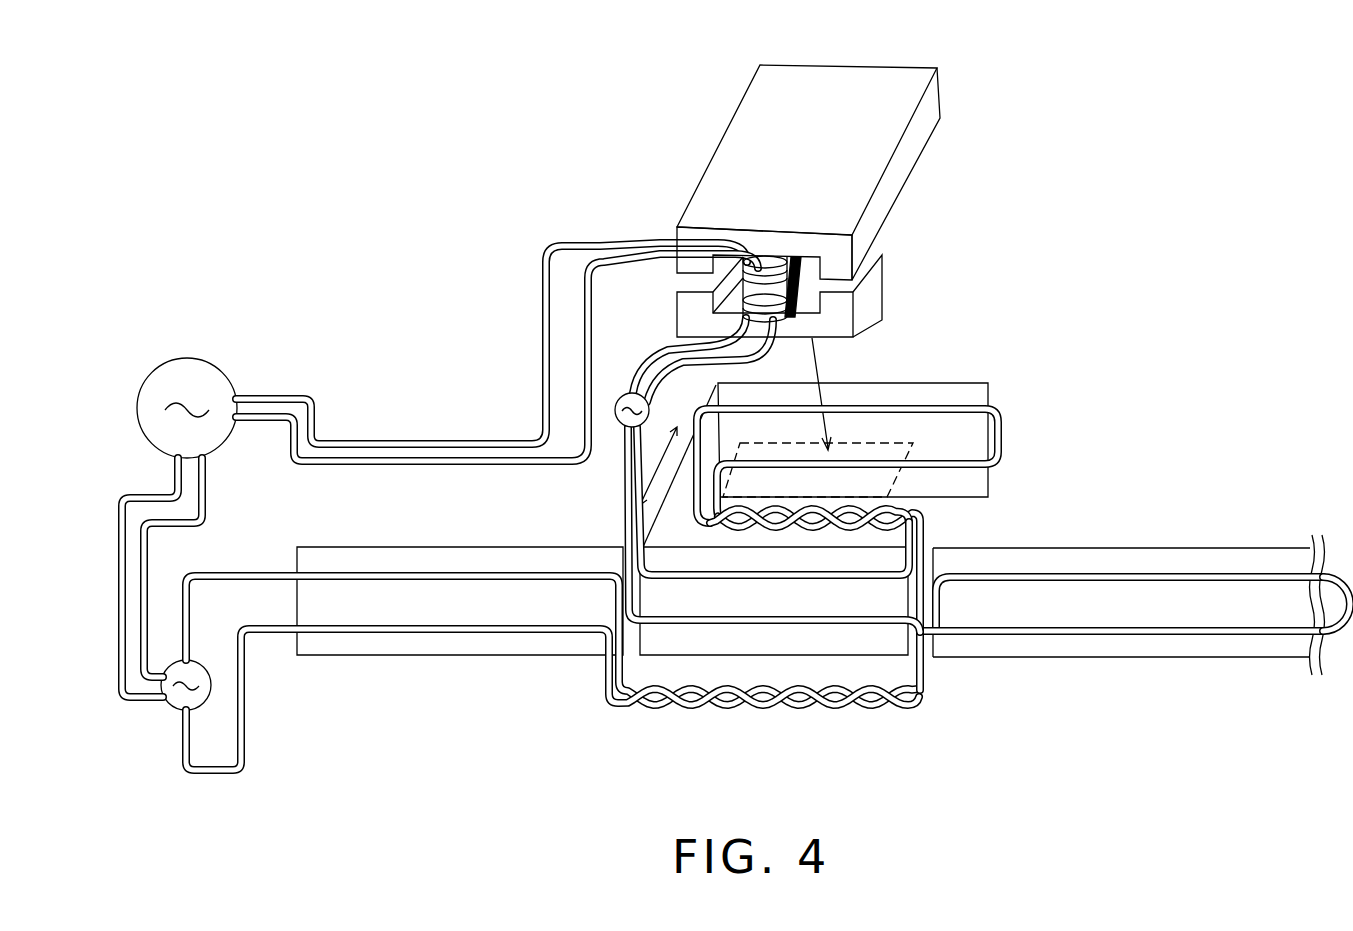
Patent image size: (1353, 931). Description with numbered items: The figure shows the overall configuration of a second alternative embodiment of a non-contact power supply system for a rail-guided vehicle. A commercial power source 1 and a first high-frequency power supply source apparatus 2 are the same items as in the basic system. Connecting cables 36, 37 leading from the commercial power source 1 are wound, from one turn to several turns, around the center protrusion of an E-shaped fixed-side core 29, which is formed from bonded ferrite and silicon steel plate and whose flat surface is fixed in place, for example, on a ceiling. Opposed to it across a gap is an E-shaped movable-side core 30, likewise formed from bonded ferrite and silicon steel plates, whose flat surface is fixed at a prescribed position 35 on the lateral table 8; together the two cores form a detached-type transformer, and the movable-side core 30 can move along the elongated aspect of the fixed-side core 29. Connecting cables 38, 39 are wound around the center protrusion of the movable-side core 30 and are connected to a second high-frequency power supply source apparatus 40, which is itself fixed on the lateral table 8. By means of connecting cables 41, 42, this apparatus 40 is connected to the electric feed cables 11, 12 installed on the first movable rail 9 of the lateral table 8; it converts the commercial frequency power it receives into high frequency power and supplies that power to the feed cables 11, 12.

The commercial power source 1 is at (193, 358).
The first high-frequency power supply source apparatus 2 is at (166, 712).
The lateral table 8 is at (969, 382).
The first movable rail 9 is at (698, 657).
The feeder cable 11 is at (754, 582).
The feeder cable 12 is at (818, 632).
The fixed-side core 29 is at (790, 64).
The movable-side core 30 is at (888, 268).
The prescribed position 35 is at (900, 480).
The connecting cable 36 is at (405, 441).
The connecting cable 37 is at (379, 466).
The connecting cable 38 is at (643, 352).
The connecting cable 39 is at (665, 372).
The second high-frequency power supply source apparatus 40 is at (620, 397).
The connecting cable 41 is at (617, 478).
The connecting cable 42 is at (622, 522).